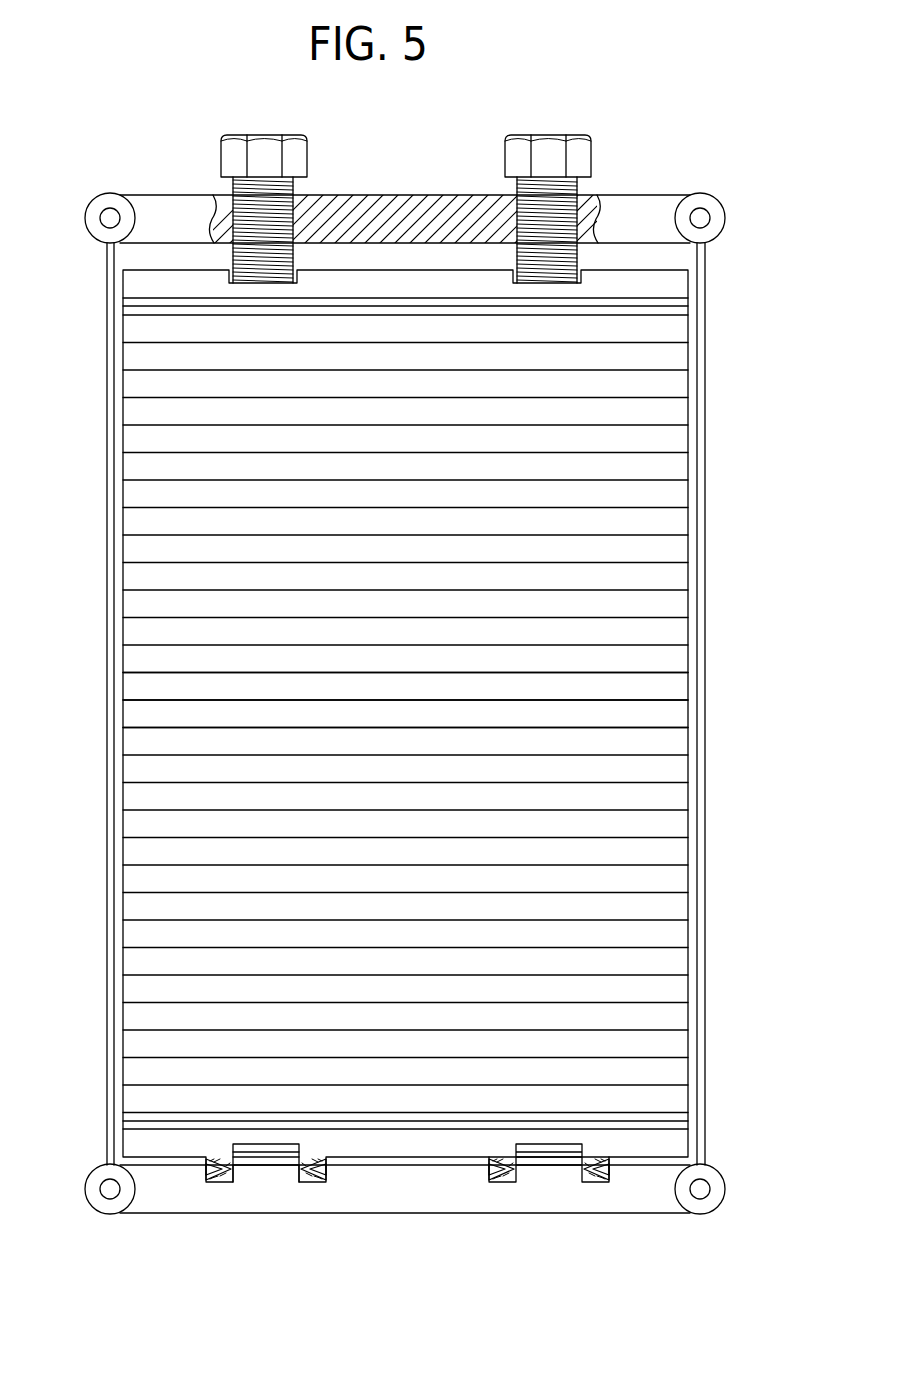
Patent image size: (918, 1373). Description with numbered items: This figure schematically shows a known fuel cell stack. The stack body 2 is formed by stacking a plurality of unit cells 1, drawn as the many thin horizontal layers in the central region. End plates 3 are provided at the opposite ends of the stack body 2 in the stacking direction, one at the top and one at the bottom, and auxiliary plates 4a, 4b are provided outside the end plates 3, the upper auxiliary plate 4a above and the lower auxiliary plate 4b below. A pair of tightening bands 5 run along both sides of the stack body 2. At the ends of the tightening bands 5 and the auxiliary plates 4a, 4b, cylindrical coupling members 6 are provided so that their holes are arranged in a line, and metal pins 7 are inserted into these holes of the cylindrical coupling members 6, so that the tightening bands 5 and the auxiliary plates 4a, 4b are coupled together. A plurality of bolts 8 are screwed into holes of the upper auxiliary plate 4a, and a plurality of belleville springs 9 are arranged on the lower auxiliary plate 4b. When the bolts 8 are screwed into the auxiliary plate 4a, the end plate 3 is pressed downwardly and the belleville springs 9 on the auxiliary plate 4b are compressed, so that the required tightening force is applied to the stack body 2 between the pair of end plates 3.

The unit cell 1 is at (672, 688).
The stack body 2 is at (762, 674).
The end plate 3 is at (675, 287).
The auxiliary plate 4a is at (630, 211).
The auxiliary plate 4b is at (647, 1190).
The tightening band 5 is at (107, 577).
The cylindrical coupling member 6 is at (727, 218).
The metal pin 7 is at (110, 212).
The bolt 8 is at (263, 160).
The belleville spring 9 is at (310, 1182).